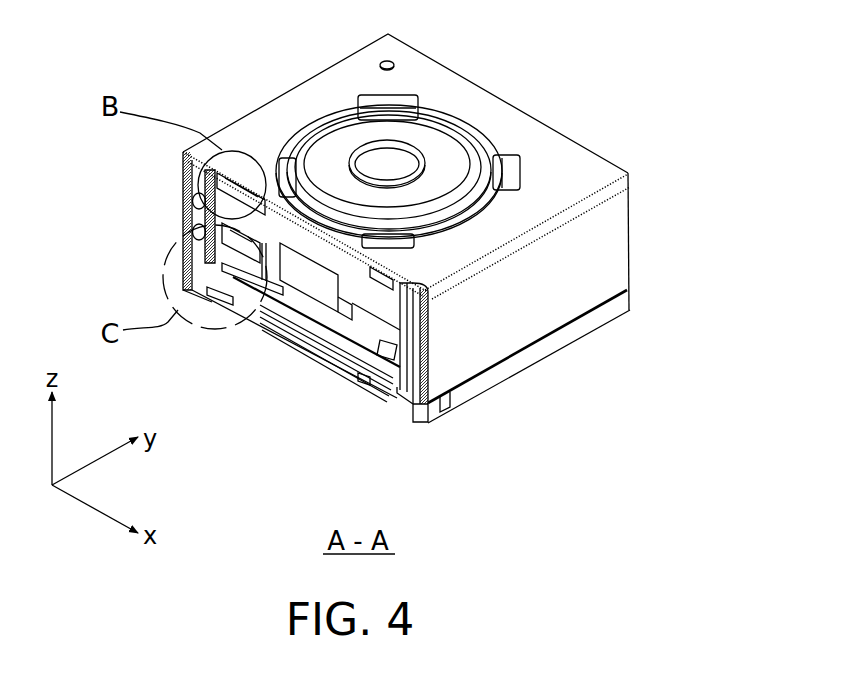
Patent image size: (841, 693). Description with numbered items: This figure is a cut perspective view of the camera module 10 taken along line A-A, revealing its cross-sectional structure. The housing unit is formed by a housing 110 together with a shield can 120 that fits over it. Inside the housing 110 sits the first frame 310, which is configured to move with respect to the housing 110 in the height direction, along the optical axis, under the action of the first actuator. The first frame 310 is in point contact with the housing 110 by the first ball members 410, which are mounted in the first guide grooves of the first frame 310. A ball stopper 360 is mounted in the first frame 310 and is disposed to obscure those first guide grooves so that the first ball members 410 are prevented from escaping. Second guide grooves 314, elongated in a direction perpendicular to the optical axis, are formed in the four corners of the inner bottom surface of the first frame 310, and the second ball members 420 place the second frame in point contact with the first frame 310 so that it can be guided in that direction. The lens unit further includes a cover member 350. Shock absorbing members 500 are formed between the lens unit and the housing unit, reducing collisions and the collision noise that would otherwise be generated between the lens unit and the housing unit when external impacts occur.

The camera module 10 is at (377, 229).
The housing 110 is at (588, 324).
The shield can 120 is at (566, 155).
The first frame 310 is at (247, 282).
The second guide grooves 314 is at (229, 298).
The cover member 350 is at (413, 324).
The ball stopper 360 is at (368, 325).
The first ball members 410 is at (203, 202).
The second ball members 420 is at (207, 262).
The shock absorbing members 500 is at (232, 153).